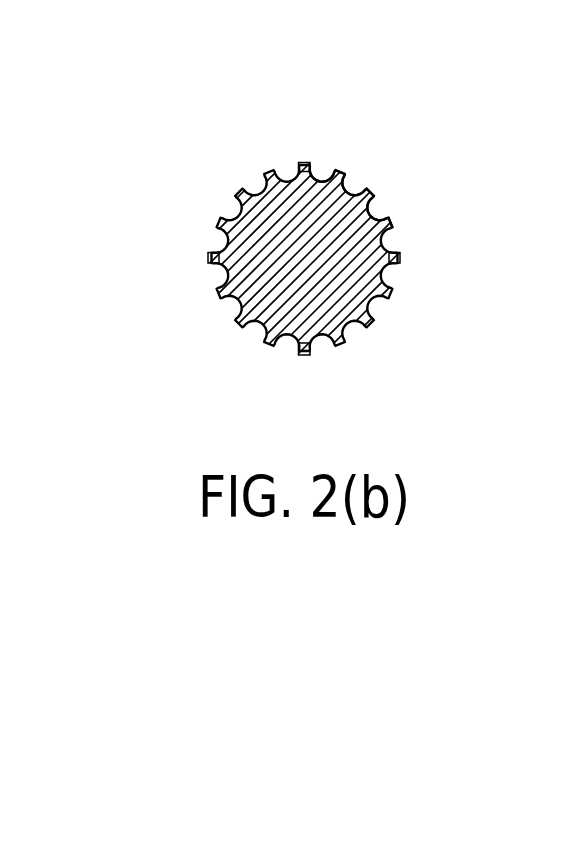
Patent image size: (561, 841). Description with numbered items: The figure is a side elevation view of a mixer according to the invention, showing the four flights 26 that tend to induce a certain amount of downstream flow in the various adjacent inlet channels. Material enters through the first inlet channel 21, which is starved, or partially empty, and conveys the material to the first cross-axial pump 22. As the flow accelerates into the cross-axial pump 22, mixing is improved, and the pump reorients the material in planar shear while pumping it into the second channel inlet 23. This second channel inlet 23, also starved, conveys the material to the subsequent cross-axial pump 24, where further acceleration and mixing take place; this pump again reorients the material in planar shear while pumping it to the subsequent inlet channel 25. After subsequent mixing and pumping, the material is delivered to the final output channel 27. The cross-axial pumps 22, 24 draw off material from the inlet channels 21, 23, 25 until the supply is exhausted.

The first inlet channel 21 is at (390, 243).
The first cross-axial pump 22 is at (388, 230).
The second channel inlet 23 is at (373, 212).
The subsequent cross-axial pump 24 is at (356, 182).
The subsequent inlet channel 25 is at (366, 182).
The flight 26 is at (305, 163).
The final output channel 27 is at (322, 170).